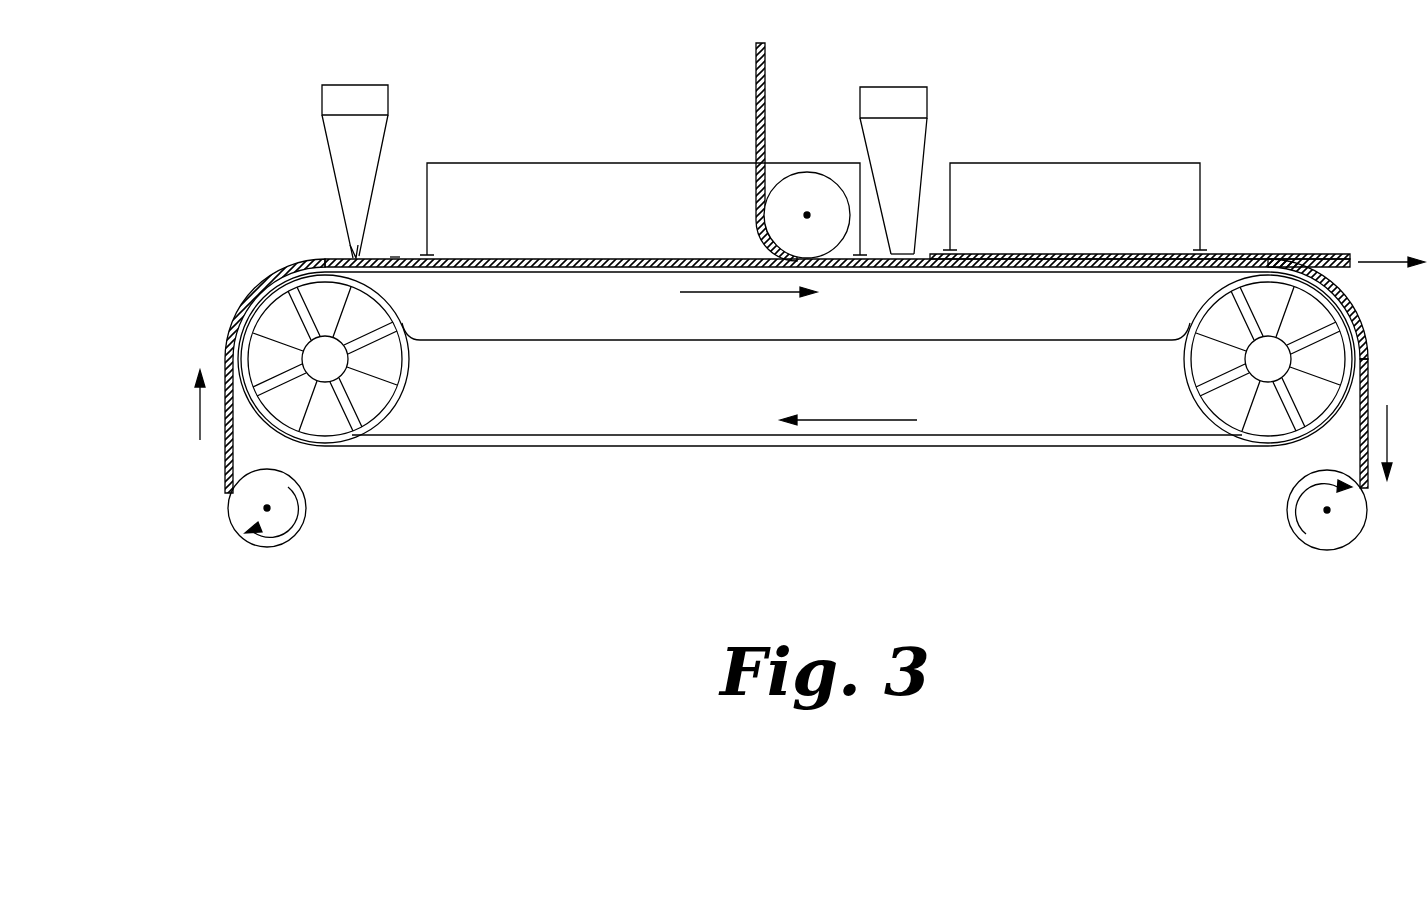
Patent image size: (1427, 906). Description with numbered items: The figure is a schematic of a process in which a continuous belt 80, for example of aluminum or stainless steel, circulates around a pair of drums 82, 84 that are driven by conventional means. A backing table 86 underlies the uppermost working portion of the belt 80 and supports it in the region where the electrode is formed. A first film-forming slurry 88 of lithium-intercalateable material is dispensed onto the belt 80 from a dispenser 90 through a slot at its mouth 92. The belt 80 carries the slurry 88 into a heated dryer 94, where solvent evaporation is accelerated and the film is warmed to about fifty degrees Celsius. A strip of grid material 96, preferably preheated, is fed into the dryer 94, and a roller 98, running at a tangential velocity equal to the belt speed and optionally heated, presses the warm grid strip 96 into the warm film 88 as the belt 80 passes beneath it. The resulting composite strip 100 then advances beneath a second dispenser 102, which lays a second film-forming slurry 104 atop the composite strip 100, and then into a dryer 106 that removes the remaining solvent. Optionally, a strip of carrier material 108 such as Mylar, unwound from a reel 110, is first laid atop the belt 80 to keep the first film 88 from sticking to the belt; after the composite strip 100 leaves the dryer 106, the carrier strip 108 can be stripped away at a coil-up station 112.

The continuous belt 80 is at (430, 447).
The drum 82 is at (405, 373).
The drum 84 is at (1207, 407).
The backing table 86 is at (720, 323).
The first film-forming slurry 88 is at (395, 256).
The dispenser 90 is at (372, 85).
The mouth 92 is at (350, 252).
The heated dryer 94 is at (594, 225).
The strip of grid material 96 is at (757, 75).
The roller 98 is at (815, 172).
The composite strip 100 is at (872, 265).
The second dispenser 102 is at (917, 87).
The second film-forming slurry 104 is at (918, 250).
The dryer 106 is at (1101, 219).
The strip of carrier material 108 is at (226, 467).
The reel 110 is at (300, 534).
The coil-up station 112 is at (1307, 545).